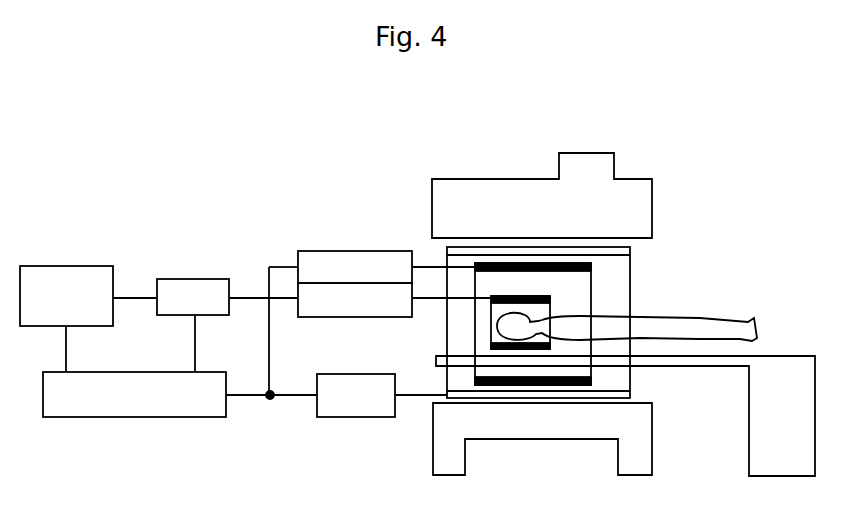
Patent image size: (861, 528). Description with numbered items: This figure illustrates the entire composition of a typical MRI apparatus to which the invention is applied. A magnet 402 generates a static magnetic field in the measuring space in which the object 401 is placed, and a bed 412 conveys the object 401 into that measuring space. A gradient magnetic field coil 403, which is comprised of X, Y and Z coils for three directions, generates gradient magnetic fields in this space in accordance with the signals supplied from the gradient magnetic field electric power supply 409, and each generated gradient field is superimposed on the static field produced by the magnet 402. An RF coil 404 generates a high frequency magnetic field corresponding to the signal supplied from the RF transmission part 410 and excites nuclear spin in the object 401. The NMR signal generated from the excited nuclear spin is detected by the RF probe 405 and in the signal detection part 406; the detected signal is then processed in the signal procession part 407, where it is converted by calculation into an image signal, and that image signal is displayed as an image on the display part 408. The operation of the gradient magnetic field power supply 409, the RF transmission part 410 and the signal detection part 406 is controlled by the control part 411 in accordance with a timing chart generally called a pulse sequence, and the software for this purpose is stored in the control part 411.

The object 401 is at (660, 320).
The magnet 402 is at (636, 183).
The gradient magnetic field coil 403 is at (542, 392).
The RF coil 404 is at (592, 266).
The RF probe 405 is at (520, 296).
The signal detection part 406 is at (362, 304).
The signal procession part 407 is at (186, 283).
The display part 408 is at (62, 270).
The gradient magnetic field electric power supply 409 is at (365, 410).
The RF transmission part 410 is at (346, 258).
The control part 411 is at (140, 410).
The bed 412 is at (730, 362).